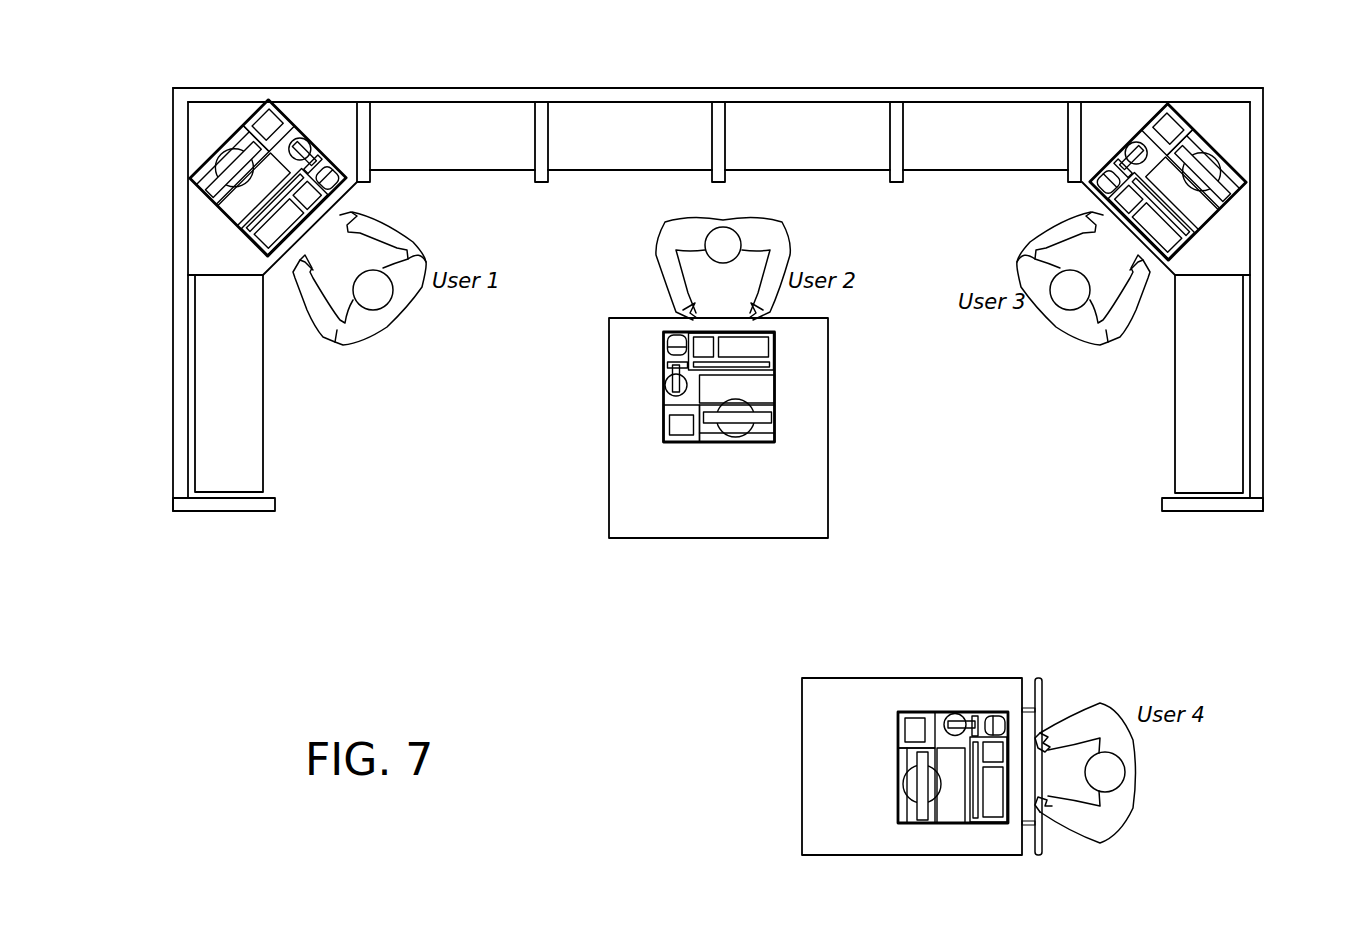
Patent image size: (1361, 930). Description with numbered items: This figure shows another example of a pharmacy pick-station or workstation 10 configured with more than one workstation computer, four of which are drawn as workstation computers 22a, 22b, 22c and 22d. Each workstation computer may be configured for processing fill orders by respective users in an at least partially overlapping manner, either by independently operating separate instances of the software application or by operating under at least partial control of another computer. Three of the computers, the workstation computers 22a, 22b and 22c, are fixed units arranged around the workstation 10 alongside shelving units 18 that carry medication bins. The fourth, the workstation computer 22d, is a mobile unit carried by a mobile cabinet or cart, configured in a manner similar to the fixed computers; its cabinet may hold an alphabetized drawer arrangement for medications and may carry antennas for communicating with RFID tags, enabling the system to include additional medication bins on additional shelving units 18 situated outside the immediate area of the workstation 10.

The workstation 10 is at (1160, 63).
The shelving unit 18 is at (453, 162).
The workstation computer 22a is at (250, 156).
The workstation computer 22b is at (730, 413).
The workstation computer 22c is at (1203, 182).
The workstation computer 22d is at (923, 785).